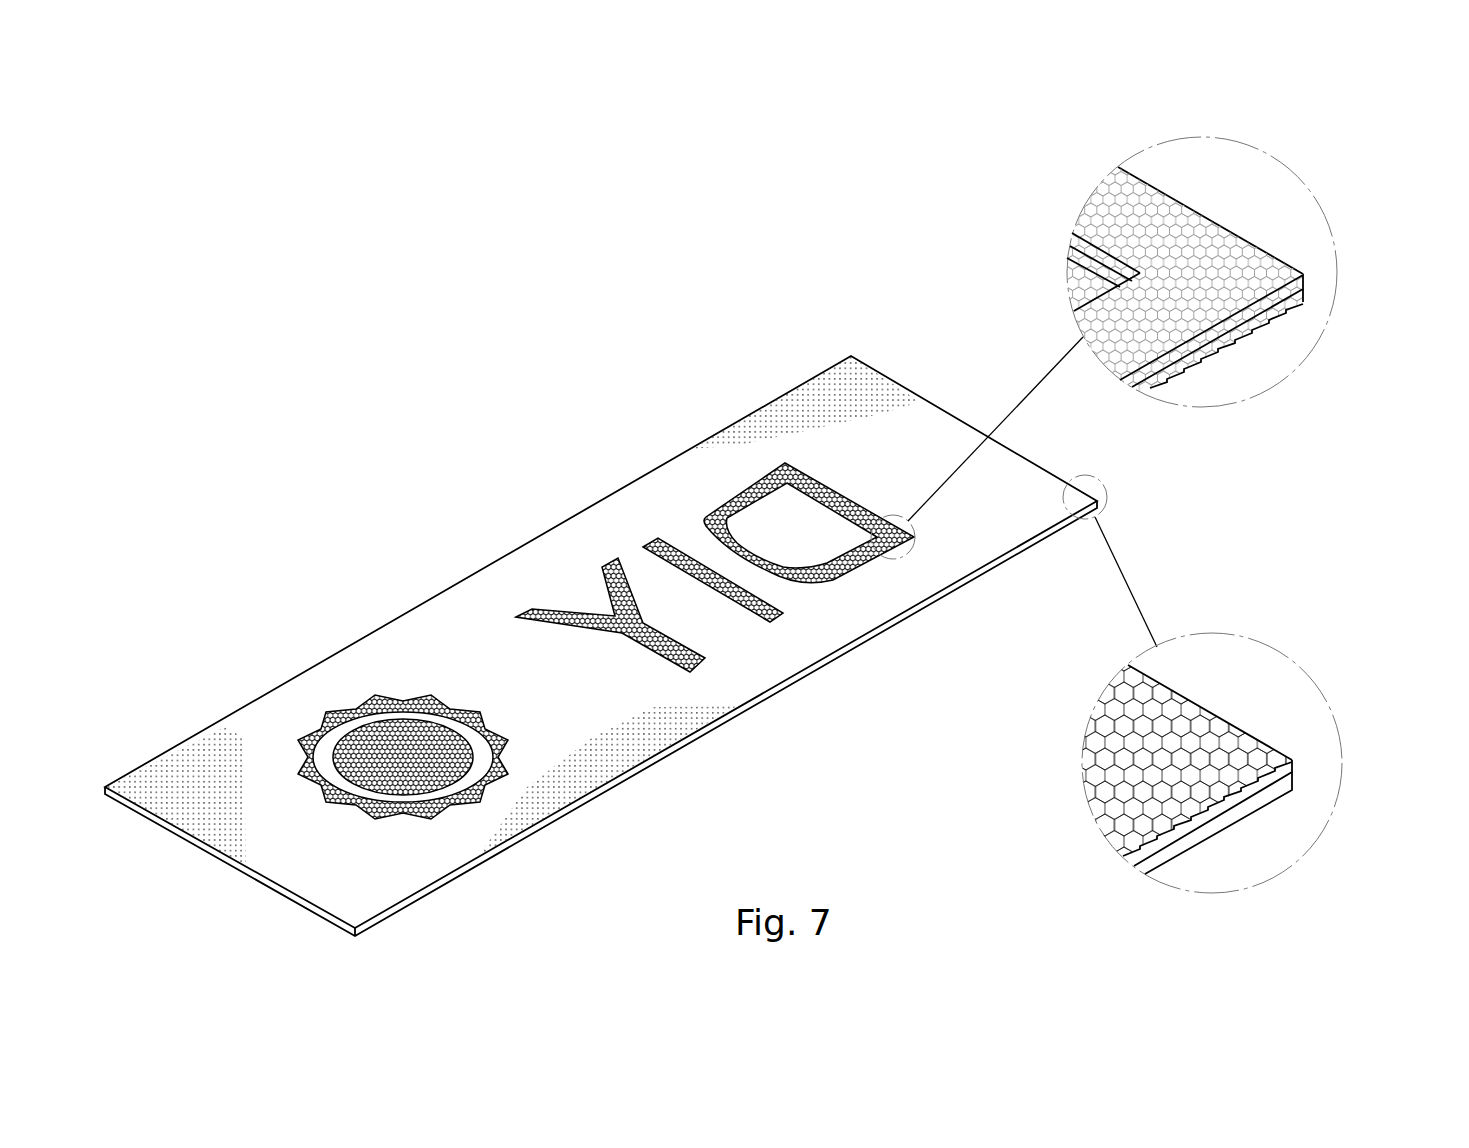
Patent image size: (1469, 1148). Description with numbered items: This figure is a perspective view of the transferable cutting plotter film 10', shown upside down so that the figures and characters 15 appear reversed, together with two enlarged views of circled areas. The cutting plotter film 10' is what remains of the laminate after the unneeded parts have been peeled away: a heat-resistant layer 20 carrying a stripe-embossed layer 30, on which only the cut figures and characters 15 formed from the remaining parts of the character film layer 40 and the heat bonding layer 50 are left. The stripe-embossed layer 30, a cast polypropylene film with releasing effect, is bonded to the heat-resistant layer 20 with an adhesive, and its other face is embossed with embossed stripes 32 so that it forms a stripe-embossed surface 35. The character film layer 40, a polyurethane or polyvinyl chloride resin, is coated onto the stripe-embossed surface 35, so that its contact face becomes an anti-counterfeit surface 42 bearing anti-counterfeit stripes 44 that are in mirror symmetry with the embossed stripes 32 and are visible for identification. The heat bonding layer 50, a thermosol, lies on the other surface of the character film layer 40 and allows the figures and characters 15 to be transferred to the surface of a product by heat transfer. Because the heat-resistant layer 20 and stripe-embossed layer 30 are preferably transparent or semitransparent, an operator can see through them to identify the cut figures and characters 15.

The cutting plotter film 10' is at (601, 646).
The figures and characters 15 is at (572, 607).
The heat-resistant layer 20 is at (1294, 785).
The stripe-embossed layer 30 is at (1294, 763).
The embossed stripes 32 is at (1115, 788).
The stripe-embossed surface 35 is at (1122, 728).
The character film layer 40 is at (1310, 297).
The anti-counterfeit surface 42 is at (1252, 336).
The anti-counterfeit stripes 44 is at (1113, 232).
The heat bonding layer 50 is at (1307, 277).